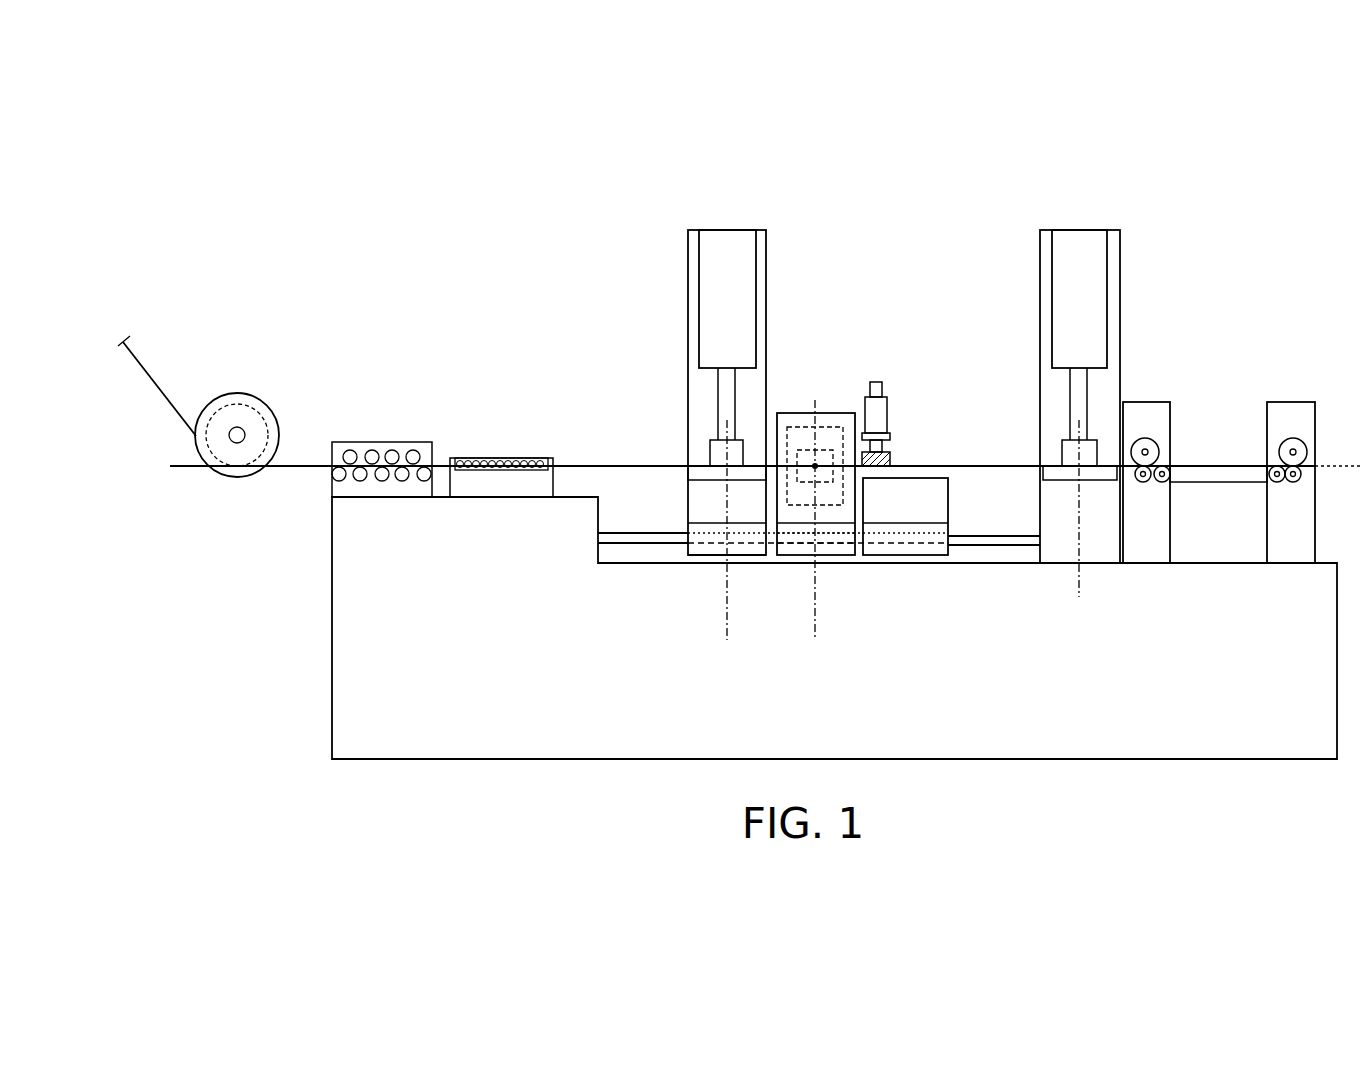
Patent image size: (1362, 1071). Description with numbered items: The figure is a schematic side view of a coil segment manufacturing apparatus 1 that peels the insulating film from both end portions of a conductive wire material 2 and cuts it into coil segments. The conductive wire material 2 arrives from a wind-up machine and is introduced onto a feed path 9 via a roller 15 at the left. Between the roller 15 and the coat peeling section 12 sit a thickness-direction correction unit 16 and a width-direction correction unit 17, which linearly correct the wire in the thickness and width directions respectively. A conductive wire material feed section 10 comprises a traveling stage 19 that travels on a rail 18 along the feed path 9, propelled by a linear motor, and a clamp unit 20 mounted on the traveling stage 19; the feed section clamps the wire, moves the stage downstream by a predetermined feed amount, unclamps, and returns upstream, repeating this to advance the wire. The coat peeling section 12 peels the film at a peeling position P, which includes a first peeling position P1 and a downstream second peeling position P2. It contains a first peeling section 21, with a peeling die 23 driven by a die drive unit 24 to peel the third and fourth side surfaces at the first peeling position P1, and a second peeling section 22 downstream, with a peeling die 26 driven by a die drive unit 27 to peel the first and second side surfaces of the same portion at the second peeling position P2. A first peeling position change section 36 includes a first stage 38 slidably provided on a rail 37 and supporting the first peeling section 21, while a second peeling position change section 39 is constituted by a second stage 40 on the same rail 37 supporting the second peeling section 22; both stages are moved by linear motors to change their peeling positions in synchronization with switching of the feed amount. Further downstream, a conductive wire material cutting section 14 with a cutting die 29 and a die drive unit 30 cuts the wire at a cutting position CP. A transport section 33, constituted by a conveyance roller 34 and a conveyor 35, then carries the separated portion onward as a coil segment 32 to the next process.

The coil segment manufacturing apparatus 1 is at (955, 166).
The conductive wire material 2 is at (157, 348).
The feed path 9 is at (180, 470).
The conductive wire material feed section 10 is at (895, 394).
The coat peeling section 12 is at (858, 228).
The conductive wire material cutting section 14 is at (1036, 277).
The roller 15 is at (250, 396).
The thickness-direction correction unit 16 is at (383, 442).
The width-direction correction unit 17 is at (503, 458).
The rail 18 is at (990, 535).
The traveling stage 19 is at (915, 557).
The clamp unit 20 is at (891, 458).
The first peeling section 21 is at (772, 281).
The second peeling section 22 is at (800, 408).
The peeling die 23 is at (710, 440).
The die drive unit 24 is at (706, 257).
The peeling die 26 is at (815, 428).
The die drive unit 27 is at (835, 452).
The cutting die 29 is at (1062, 452).
The die drive unit 30 is at (1102, 302).
The coil segment 32 is at (1198, 466).
The transport section 33 is at (1224, 390).
The conveyance roller 34 is at (1158, 440).
The conveyor 35 is at (1208, 483).
The first peeling position change section 36 is at (704, 560).
The rail 37 is at (634, 533).
The first stage 38 is at (688, 550).
The second peeling position change section 39 is at (797, 560).
The second stage 40 is at (836, 555).
The first peeling position P1 is at (727, 657).
The second peeling position P2 is at (815, 657).
The peeling position P is at (830, 675).
The cutting position CP is at (1078, 622).